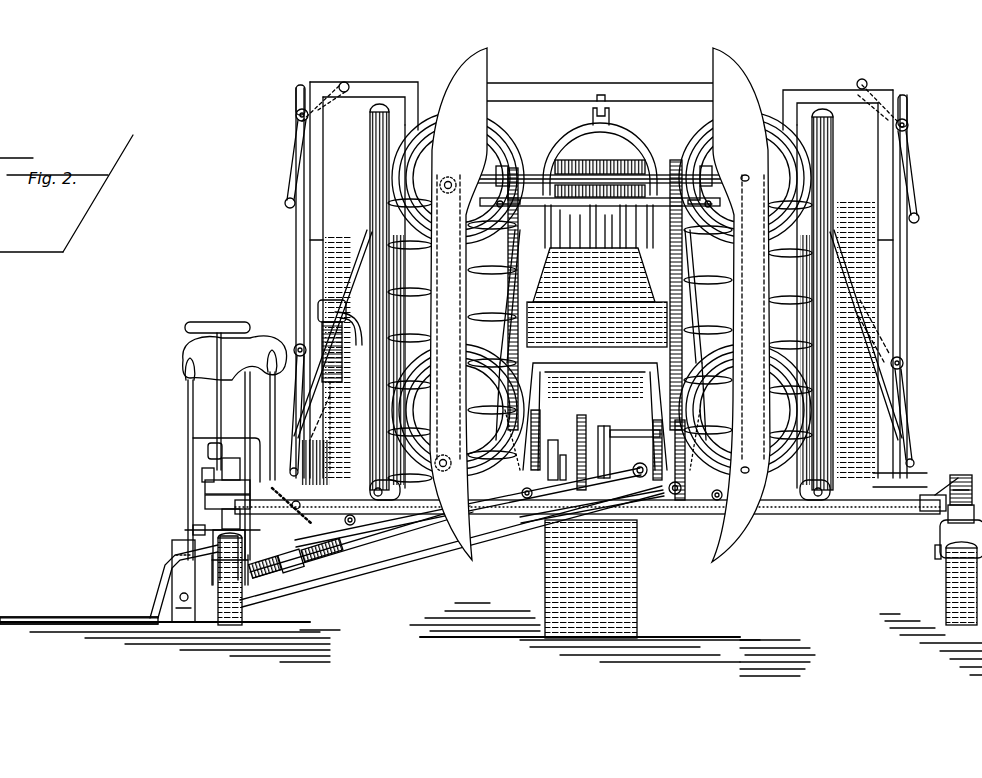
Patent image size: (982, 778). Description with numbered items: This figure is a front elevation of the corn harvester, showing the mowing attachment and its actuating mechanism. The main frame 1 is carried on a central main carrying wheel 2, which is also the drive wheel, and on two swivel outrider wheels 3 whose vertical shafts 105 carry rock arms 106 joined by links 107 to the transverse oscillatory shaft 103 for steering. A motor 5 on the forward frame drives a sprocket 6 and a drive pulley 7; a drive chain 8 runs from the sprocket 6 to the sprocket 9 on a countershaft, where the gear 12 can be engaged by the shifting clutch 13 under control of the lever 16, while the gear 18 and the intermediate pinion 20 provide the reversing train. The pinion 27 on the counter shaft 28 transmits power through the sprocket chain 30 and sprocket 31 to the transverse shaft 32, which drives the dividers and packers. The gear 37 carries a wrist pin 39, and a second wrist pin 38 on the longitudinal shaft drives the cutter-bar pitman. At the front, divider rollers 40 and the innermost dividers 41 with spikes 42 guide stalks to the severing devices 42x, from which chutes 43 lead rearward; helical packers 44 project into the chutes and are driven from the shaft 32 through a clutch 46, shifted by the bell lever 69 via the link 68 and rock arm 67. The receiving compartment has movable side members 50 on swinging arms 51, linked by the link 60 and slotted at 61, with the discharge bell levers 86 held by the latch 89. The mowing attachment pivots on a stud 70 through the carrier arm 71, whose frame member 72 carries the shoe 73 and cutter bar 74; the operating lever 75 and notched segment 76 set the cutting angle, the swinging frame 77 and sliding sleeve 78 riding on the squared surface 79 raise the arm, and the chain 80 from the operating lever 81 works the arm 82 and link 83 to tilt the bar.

The main frame 1 is at (830, 500).
The main carrying wheel 2 is at (634, 588).
The swivel outrider wheel 3 is at (238, 617).
The motor 5 is at (562, 250).
The sprocket 6 is at (594, 275).
The drive pulley 7 is at (465, 285).
The drive chain 8 is at (515, 325).
The sprocket 9 is at (518, 506).
The gear 12 is at (596, 462).
The shifting clutch 13 is at (566, 440).
The control lever 16 is at (320, 318).
The gear 18 is at (530, 440).
The intermediate pinion 20 is at (606, 440).
The pinion 27 is at (660, 418).
The counter shaft 28 is at (628, 432).
The sprocket chain 30 is at (722, 290).
The sprocket 31 is at (672, 172).
The transverse shaft 32 is at (566, 178).
The gear 37 is at (648, 500).
The wrist pin or crank 38 is at (720, 483).
The wrist pin or crank 39 is at (672, 500).
The roller 40 is at (318, 268).
The innermost divider 41 is at (445, 262).
The spikes or fingers 42 is at (790, 298).
The severing device 42x is at (805, 515).
The restricted passage or chute 43 is at (395, 490).
The helical packer 44 is at (525, 148).
The clutch 46 is at (495, 165).
The movable side member 50 is at (300, 236).
The swinging arm 51 is at (292, 178).
The link 60 is at (348, 235).
The slot 61 is at (892, 338).
The rock arm 67 is at (470, 490).
The link 68 is at (472, 342).
The bell lever 69 is at (480, 200).
The stud 70 is at (700, 490).
The carrier arm 71 is at (408, 545).
The frame member 72 is at (185, 574).
The shoe 73 is at (186, 623).
The cutter bar 74 is at (85, 618).
The operating lever 75 is at (190, 455).
The notched segment 76 is at (195, 535).
The swinging frame member 77 is at (361, 542).
The sliding sleeve or shoe 78 is at (278, 578).
The polygonal surface 79 is at (300, 560).
The link or chain 80 is at (292, 506).
The operating lever 81 is at (275, 406).
The arm 82 is at (185, 538).
The link 83 is at (205, 512).
The bell lever 86 is at (600, 159).
The pivoted latch 89 is at (603, 95).
The oscillatory shaft 103 is at (935, 490).
The vertical shaft 105 is at (205, 483).
The rock arm 106 is at (205, 493).
The link 107 is at (940, 475).